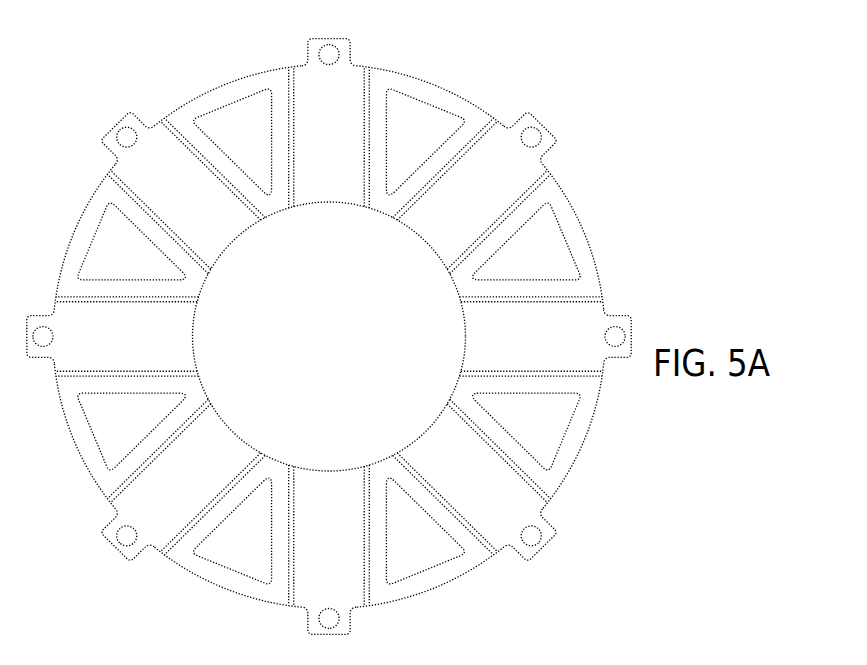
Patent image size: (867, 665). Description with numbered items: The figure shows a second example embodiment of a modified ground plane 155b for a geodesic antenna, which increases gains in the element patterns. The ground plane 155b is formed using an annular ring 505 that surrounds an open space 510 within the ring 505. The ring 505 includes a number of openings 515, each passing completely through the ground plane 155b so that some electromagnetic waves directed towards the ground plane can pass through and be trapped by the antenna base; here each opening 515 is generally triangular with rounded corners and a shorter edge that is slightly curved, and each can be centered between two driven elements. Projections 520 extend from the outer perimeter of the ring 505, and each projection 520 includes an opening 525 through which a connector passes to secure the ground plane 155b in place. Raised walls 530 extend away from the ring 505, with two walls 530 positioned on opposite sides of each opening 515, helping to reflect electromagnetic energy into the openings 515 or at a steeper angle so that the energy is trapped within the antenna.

The ground plane 155b is at (183, 74).
The annular ring 505 is at (83, 220).
The open space 510 is at (240, 324).
The opening 515 is at (558, 264).
The projection 520 is at (543, 118).
The opening 525 is at (618, 318).
The raised wall 530 is at (371, 78).